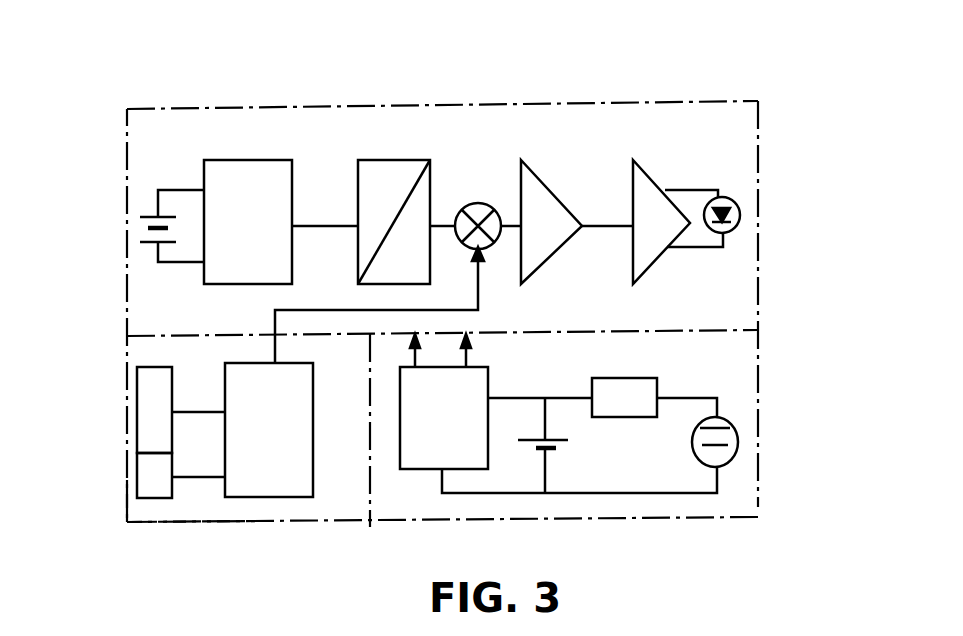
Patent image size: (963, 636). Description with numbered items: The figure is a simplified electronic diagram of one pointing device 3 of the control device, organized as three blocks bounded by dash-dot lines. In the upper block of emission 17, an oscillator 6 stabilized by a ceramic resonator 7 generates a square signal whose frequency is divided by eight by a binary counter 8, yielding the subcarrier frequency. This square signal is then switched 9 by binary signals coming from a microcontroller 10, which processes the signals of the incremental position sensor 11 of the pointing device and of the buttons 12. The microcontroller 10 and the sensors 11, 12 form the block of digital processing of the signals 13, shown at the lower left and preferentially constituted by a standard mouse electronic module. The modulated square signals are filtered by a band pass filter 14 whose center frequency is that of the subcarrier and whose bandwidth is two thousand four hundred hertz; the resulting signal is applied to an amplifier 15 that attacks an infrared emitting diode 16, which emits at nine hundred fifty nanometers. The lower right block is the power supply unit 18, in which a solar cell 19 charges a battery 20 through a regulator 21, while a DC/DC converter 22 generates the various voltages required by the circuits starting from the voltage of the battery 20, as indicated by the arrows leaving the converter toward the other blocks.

The pointing device 3 is at (725, 93).
The oscillator 6 is at (250, 195).
The ceramic resonator 7 is at (147, 217).
The binary counter 8 is at (377, 187).
The switch 9 is at (483, 202).
The microcontroller 10 is at (258, 472).
The incremental position sensor 11 is at (148, 385).
The buttons 12 is at (148, 482).
The block of digital processing of the signals 13 is at (182, 510).
The band pass filter 14 is at (527, 187).
The amplifier 15 is at (643, 192).
The infrared emitting diode 16 is at (742, 213).
The block of emission 17 is at (728, 285).
The power supply unit 18 is at (733, 507).
The solar cell 19 is at (738, 442).
The battery 20 is at (560, 450).
The regulator 21 is at (617, 393).
The DC/DC converter 22 is at (448, 440).